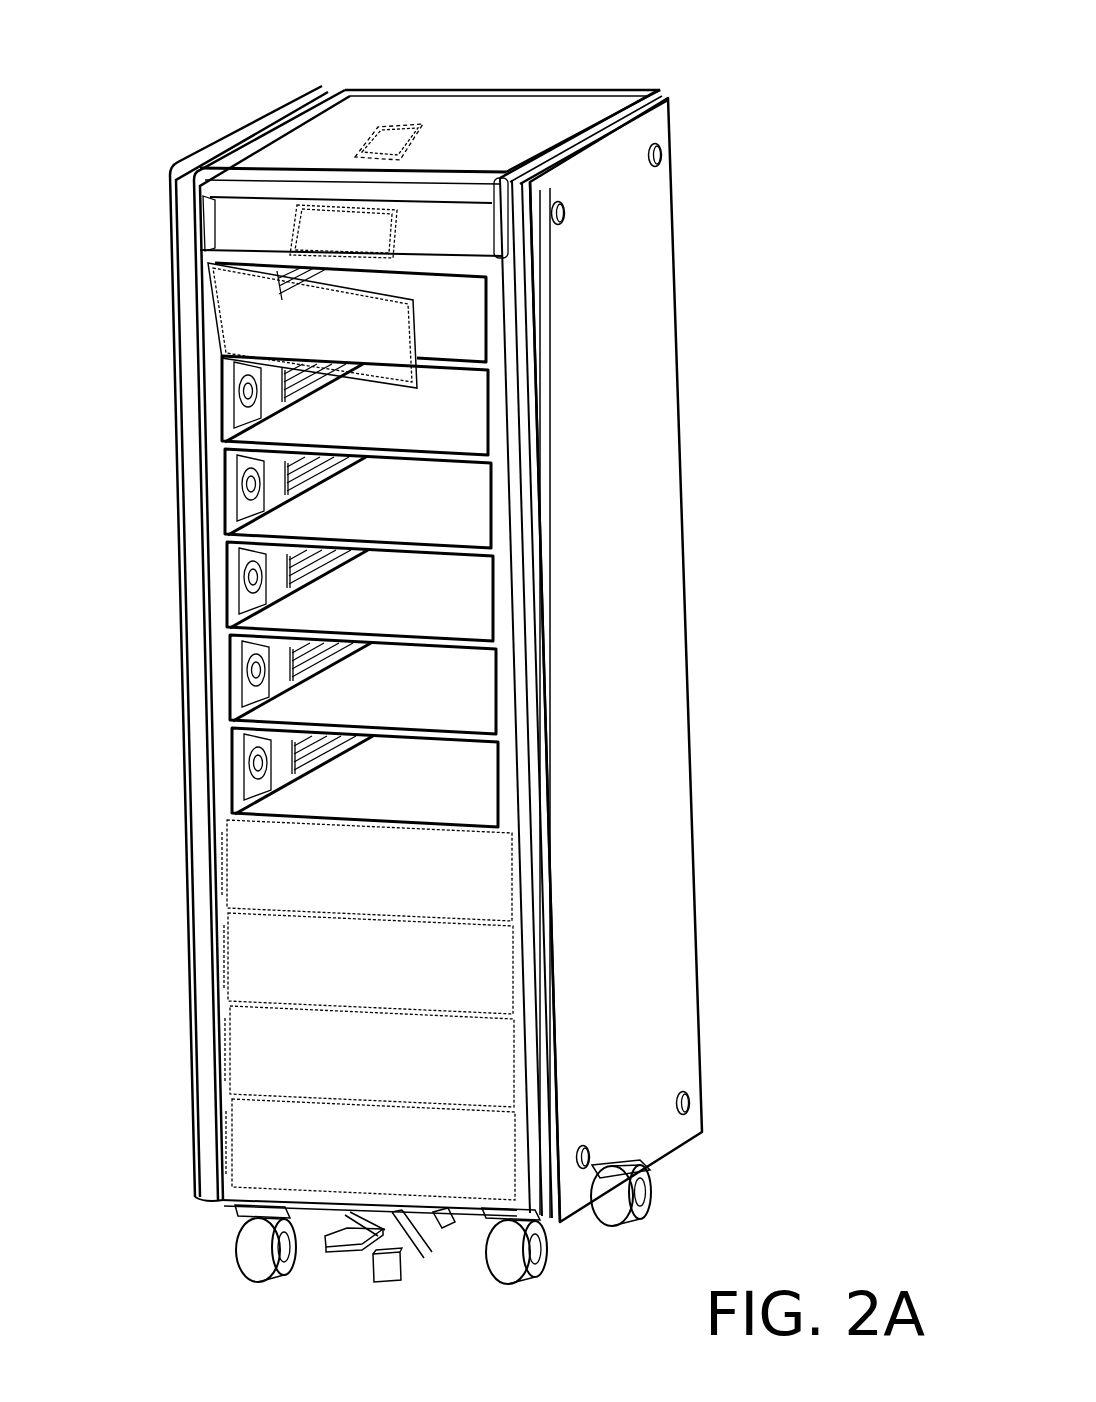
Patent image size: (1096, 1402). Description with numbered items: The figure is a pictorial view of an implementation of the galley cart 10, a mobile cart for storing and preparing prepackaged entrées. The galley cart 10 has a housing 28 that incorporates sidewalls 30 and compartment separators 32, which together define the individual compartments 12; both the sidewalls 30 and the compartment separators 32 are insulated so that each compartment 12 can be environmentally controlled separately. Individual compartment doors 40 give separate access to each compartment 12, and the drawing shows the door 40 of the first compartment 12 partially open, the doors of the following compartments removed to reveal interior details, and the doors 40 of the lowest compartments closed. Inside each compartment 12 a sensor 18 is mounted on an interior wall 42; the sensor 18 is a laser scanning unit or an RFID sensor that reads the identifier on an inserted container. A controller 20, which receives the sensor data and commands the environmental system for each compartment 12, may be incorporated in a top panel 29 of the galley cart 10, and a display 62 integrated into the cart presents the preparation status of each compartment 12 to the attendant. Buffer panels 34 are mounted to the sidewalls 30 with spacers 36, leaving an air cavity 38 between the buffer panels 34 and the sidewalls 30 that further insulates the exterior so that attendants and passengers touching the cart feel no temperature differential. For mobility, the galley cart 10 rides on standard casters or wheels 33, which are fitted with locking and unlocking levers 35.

The galley cart 10 is at (728, 30).
The compartment 12 is at (430, 368).
The sensor 18 is at (257, 387).
The controller 20 is at (390, 135).
The housing 28 is at (487, 130).
The top panel 29 is at (543, 130).
The sidewall 30 is at (250, 555).
The compartment separator 32 is at (485, 352).
The casters or wheels 33 is at (652, 1220).
The buffer panel 34 is at (643, 603).
The locking and unlocking lever 35 is at (400, 1262).
The spacer 36 is at (562, 215).
The air cavity 38 is at (203, 792).
The compartment door 40 is at (272, 330).
The interior wall 42 is at (267, 403).
The display 62 is at (326, 220).